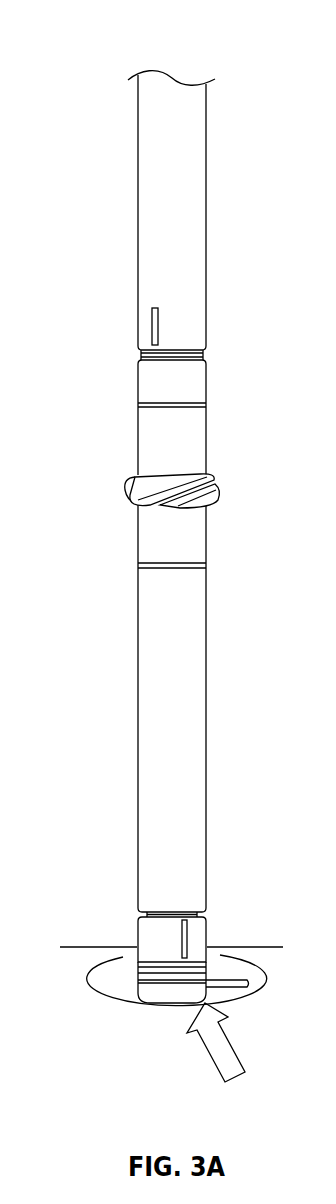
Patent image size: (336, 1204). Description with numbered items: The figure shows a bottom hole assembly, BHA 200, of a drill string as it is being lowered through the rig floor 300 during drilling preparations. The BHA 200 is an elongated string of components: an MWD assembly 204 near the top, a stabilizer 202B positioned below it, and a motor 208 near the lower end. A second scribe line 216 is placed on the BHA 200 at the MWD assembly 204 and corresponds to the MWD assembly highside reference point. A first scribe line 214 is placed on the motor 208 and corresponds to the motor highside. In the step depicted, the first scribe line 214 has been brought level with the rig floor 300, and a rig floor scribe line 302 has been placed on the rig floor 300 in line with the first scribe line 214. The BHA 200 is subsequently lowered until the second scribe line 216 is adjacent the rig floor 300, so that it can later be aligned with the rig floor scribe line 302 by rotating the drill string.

The BHA 200 is at (106, 52).
The MWD assembly 204 is at (126, 321).
The second scribe line 216 is at (158, 330).
The stabilizer 202B is at (222, 497).
The motor 208 is at (137, 945).
The first scribe line 214 is at (187, 940).
The rig floor 300 is at (133, 1048).
The rig floor scribe line 302 is at (215, 1065).